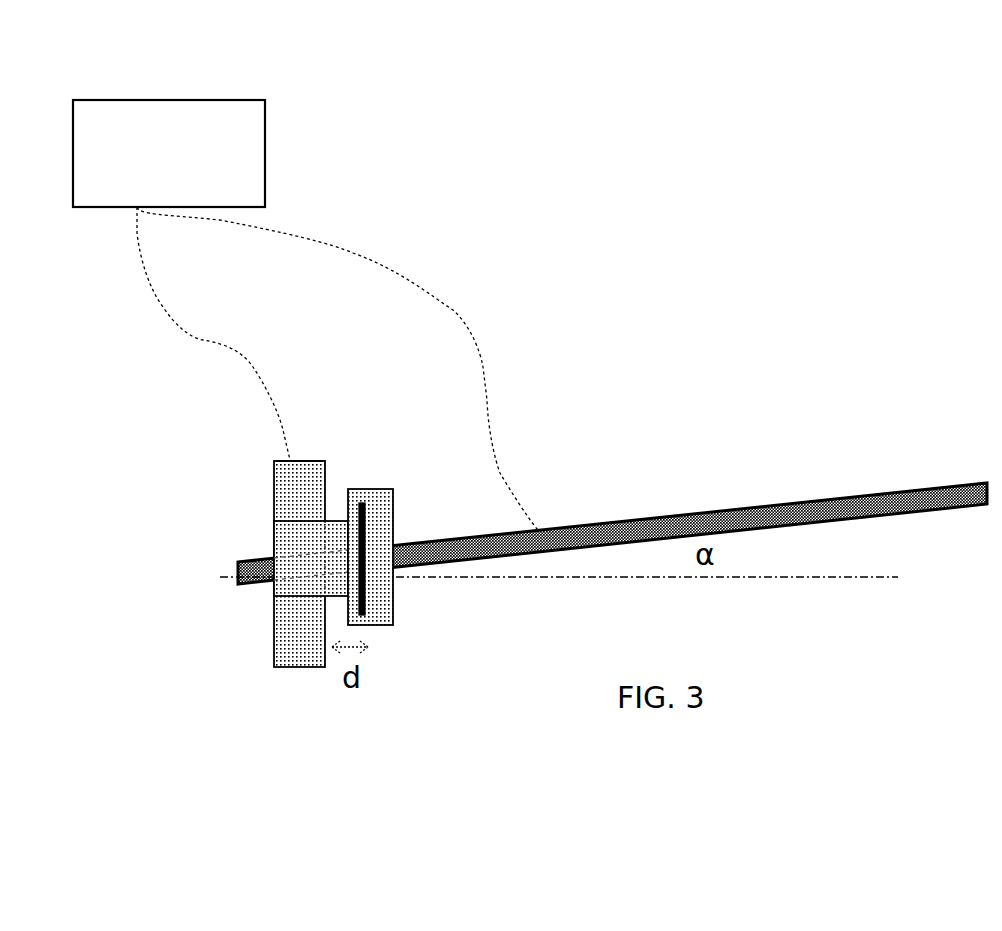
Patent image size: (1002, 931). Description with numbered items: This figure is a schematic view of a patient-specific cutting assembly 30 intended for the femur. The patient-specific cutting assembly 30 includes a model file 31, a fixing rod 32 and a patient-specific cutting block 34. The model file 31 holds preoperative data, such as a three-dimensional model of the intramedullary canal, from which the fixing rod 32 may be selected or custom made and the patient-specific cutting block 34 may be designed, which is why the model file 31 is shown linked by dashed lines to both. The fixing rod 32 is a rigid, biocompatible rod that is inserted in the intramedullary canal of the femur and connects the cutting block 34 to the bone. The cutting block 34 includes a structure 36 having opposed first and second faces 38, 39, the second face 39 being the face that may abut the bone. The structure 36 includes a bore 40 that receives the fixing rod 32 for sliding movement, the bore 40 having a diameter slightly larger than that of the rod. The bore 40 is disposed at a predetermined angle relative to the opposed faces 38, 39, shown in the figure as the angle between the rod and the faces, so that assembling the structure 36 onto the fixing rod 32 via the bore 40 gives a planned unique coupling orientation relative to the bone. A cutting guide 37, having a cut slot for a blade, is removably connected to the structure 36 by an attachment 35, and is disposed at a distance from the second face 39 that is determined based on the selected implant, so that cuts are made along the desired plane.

The patient-specific cutting assembly 30 is at (554, 433).
The model file 31 is at (265, 147).
The fixing rod 32 is at (715, 512).
The patient-specific cutting block 34 is at (288, 484).
The attachment 35 is at (360, 506).
The structure 36 is at (299, 461).
The cutting guide 37 is at (362, 593).
The first face 38 is at (274, 491).
The second face 39 is at (326, 490).
The bore 40 is at (306, 570).